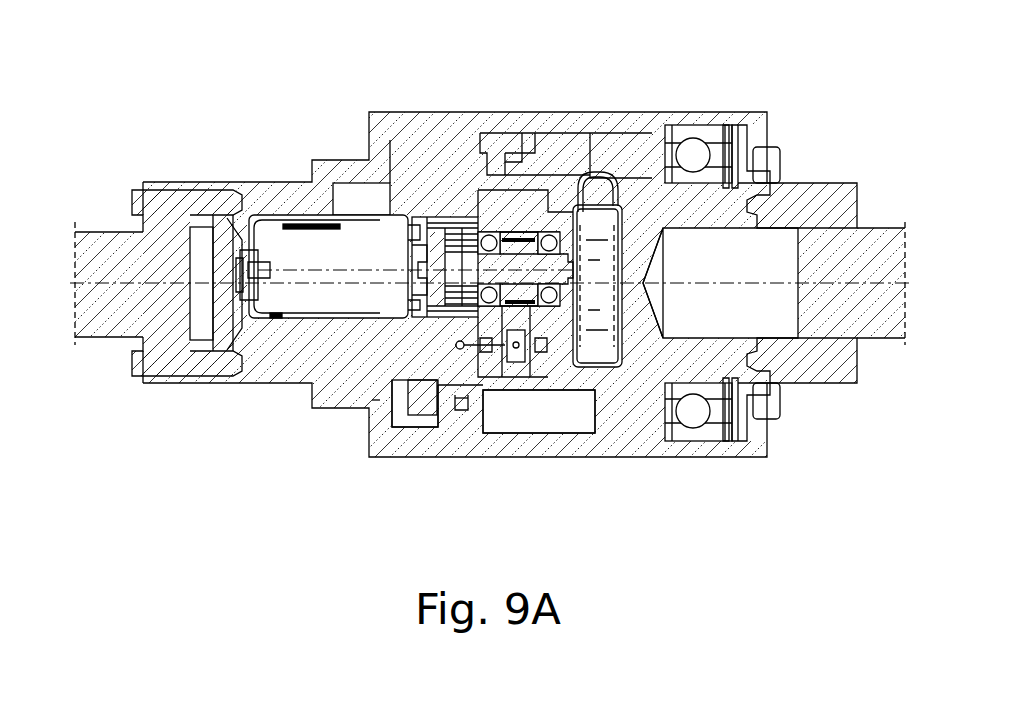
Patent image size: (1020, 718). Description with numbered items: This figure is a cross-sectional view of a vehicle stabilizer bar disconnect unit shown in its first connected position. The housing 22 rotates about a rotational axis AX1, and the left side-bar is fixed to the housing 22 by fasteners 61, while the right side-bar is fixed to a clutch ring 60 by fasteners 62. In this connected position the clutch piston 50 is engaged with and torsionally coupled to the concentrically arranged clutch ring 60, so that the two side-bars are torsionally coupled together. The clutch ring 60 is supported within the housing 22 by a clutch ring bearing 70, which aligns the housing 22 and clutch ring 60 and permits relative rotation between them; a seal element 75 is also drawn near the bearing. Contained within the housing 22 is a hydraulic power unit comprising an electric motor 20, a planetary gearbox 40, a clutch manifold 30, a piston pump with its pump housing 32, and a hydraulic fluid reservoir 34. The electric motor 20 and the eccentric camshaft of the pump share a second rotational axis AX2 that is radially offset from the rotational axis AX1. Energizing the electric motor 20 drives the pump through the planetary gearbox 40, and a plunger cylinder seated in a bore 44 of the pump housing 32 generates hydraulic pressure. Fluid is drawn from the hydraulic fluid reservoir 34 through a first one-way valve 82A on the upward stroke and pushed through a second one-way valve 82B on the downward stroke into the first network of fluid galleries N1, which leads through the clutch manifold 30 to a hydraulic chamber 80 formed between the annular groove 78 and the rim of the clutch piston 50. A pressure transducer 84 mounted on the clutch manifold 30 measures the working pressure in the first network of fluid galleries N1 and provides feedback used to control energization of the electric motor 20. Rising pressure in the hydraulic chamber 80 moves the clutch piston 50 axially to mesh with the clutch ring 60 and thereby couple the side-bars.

The rotational axis AX1 is at (143, 282).
The rotational axis AX2 is at (322, 265).
The electric motor 20 is at (275, 228).
The housing 22 is at (407, 127).
The clutch manifold 30 is at (446, 172).
The pump housing 32 is at (572, 215).
The hydraulic fluid reservoir 34 is at (602, 217).
The planetary gearbox 40 is at (447, 217).
The bore 44 is at (543, 413).
The clutch piston 50 is at (549, 185).
The clutch ring 60 is at (692, 150).
The fasteners 61 is at (210, 195).
The fasteners 62 is at (820, 205).
The clutch ring bearing 70 is at (728, 150).
The seal 75 is at (768, 172).
The annular groove 78 is at (493, 160).
The hydraulic chamber 80 is at (598, 192).
The first one-way valve 82A is at (573, 420).
The second one-way valve 82B is at (490, 415).
The pressure transducer 84 is at (427, 410).
The first network of fluid galleries N1 is at (372, 412).